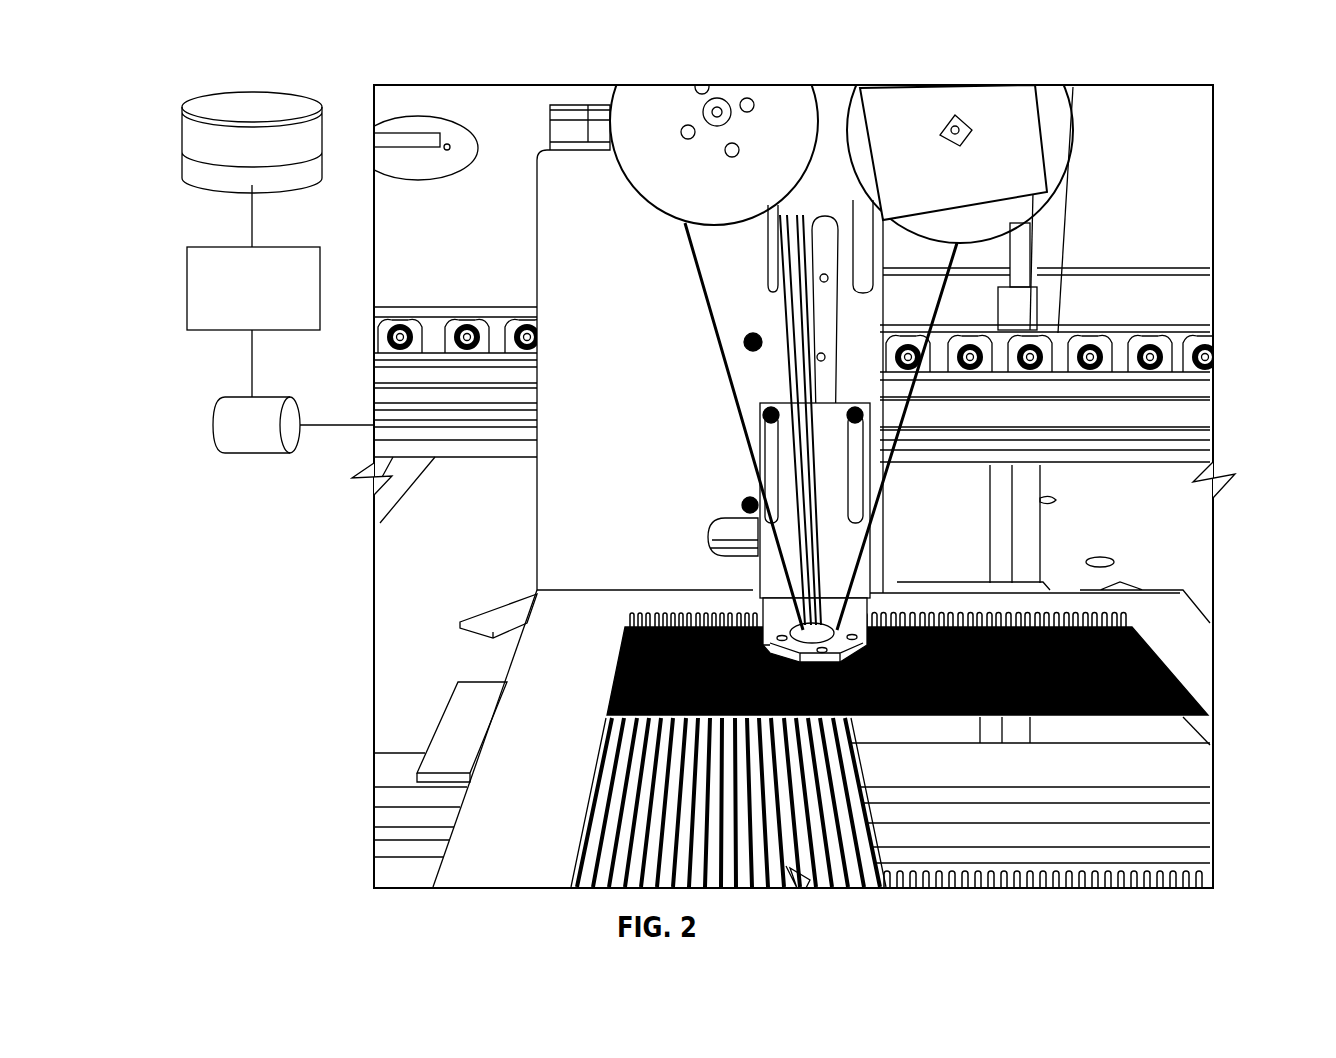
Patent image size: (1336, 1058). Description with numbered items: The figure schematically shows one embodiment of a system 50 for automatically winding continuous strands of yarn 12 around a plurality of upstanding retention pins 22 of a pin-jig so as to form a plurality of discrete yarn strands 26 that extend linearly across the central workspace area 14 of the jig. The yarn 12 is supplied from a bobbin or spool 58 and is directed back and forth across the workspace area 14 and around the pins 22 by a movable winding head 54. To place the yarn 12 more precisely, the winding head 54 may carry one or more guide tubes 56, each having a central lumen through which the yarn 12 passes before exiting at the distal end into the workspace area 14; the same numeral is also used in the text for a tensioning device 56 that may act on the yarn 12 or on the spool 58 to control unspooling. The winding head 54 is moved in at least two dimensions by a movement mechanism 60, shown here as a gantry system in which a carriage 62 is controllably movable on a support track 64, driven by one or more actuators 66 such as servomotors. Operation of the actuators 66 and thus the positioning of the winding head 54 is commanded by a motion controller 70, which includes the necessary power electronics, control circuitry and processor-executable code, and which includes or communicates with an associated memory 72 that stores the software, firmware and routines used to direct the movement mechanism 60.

The yarn 12 is at (787, 253).
The workspace area 14 is at (1128, 775).
The retention pins 22 is at (1090, 620).
The yarn strands 26 is at (855, 757).
The system 50 is at (1117, 51).
The winding head 54 is at (853, 627).
The guide tube 56 is at (885, 720).
The spool 58 is at (795, 110).
The movement mechanism 60 is at (1194, 415).
The carriage 62 is at (850, 332).
The support track 64 is at (1222, 477).
The actuators 66 is at (250, 454).
The motion controller 70 is at (187, 290).
The memory 72 is at (245, 88).